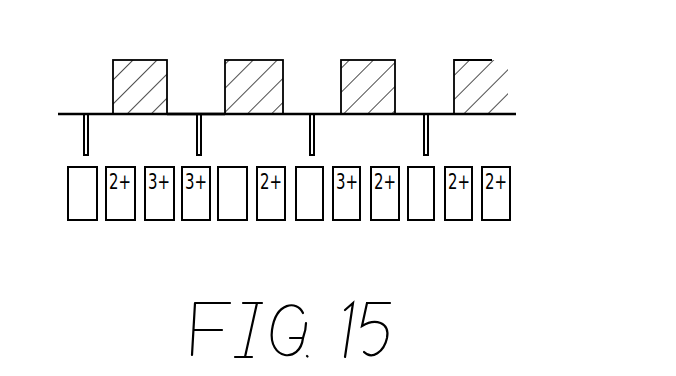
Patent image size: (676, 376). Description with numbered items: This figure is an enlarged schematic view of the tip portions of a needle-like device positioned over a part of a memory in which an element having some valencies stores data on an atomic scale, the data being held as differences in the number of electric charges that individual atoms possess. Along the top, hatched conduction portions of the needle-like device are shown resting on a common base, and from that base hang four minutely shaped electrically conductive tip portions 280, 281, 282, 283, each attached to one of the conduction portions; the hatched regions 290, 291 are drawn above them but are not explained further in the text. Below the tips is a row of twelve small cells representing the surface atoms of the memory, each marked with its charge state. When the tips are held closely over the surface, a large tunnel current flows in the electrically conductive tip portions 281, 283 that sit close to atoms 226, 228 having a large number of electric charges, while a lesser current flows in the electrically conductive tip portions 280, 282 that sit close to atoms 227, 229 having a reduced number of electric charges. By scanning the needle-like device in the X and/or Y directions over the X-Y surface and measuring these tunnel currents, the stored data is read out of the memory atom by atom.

The atom having a large number of electric charges 226 is at (418, 220).
The atom having a reduced number of electric charges 227 is at (306, 220).
The atom having a large number of electric charges 228 is at (229, 220).
The atom having a reduced number of electric charges 229 is at (78, 220).
The electrically conductive tip portion 280 is at (90, 135).
The electrically conductive tip portion 281 is at (203, 135).
The electrically conductive tip portion 282 is at (316, 135).
The electrically conductive tip portion 283 is at (430, 135).
The hatched block 290 is at (135, 63).
The gap between blocks 291 is at (197, 72).